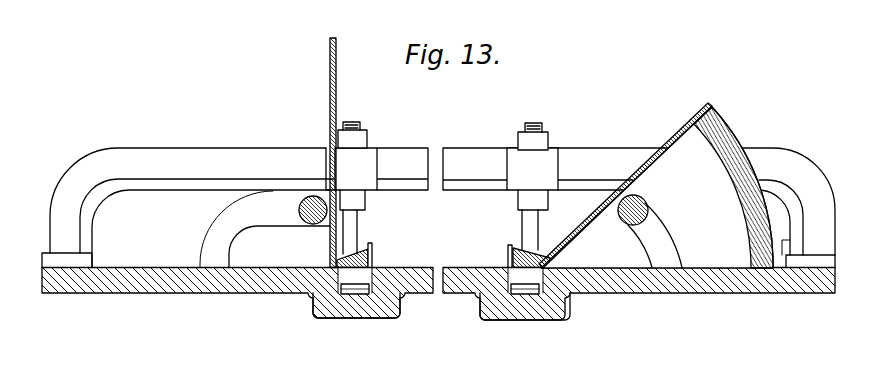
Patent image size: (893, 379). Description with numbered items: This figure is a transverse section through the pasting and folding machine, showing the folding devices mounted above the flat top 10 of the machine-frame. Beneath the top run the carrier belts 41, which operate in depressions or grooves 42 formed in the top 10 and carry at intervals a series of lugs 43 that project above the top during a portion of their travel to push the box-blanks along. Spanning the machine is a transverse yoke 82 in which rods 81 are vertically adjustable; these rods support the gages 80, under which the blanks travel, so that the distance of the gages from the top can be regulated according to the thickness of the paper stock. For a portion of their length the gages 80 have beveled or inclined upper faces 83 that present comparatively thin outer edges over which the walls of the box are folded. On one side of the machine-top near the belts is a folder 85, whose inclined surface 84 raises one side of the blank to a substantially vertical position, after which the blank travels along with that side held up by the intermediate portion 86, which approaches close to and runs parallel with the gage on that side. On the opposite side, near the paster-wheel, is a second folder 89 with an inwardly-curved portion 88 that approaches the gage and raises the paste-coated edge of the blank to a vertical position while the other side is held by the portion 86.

The top 10 is at (215, 282).
The belts 41 is at (355, 295).
The grooves 42 is at (480, 298).
The lugs 43 is at (508, 262).
The gages 80 is at (357, 252).
The rods 81 is at (356, 228).
The transverse yoke 82 is at (496, 169).
The inclined upper faces 83 is at (338, 260).
The inclined surface 84 is at (244, 220).
The folder 85 is at (217, 247).
The intermediate portion 86 is at (313, 200).
The inwardly-curved portion 88 is at (647, 203).
The folder 89 is at (662, 248).